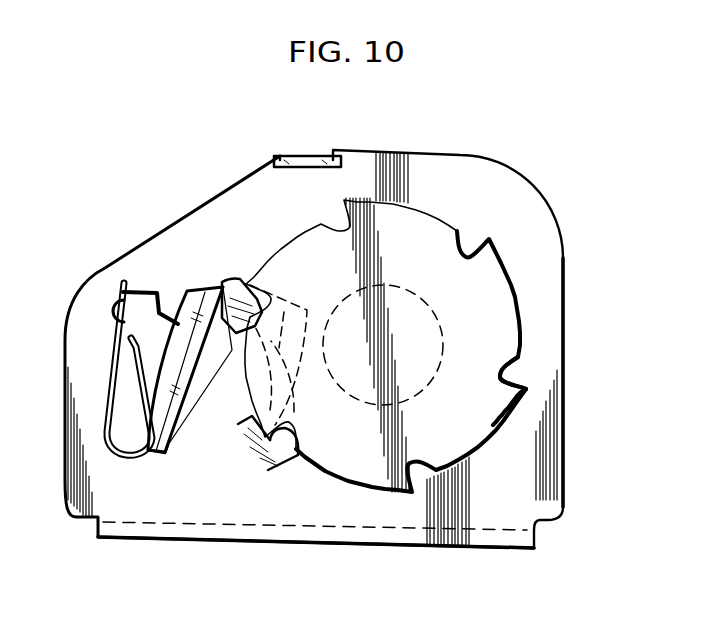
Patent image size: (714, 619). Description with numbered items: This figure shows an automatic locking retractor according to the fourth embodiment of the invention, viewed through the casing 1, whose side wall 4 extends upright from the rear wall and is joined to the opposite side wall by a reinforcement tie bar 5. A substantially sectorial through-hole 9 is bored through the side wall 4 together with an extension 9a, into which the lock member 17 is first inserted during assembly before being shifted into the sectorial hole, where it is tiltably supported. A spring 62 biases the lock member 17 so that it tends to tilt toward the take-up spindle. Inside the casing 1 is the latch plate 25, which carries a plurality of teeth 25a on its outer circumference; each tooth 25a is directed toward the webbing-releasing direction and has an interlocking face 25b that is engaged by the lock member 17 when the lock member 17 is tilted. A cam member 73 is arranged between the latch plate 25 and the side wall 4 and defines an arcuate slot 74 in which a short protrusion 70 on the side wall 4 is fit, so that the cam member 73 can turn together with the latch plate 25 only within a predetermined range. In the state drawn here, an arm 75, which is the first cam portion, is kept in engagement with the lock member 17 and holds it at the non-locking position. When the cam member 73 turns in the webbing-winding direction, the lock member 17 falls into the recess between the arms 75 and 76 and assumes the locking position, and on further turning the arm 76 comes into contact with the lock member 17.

The casing 1 is at (58, 422).
The side wall 4 is at (532, 196).
The reinforcement tie bar 5 is at (303, 156).
The sectorial through-hole 9 is at (192, 393).
The extension of through-hole 9a is at (150, 303).
The lock member 17 is at (165, 453).
The latch plate 25 is at (493, 288).
The tooth 25a is at (507, 398).
The interlocking face 25b is at (517, 380).
The spring 62 is at (128, 347).
The short protrusion 70 is at (284, 313).
The cam member 73 is at (272, 445).
The arcuate slot 74 is at (318, 430).
The arm 75 is at (233, 283).
The arm 76 is at (247, 432).